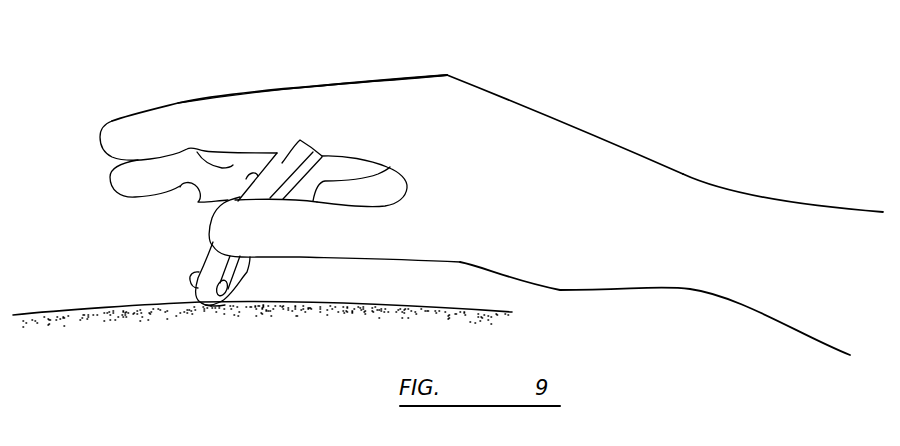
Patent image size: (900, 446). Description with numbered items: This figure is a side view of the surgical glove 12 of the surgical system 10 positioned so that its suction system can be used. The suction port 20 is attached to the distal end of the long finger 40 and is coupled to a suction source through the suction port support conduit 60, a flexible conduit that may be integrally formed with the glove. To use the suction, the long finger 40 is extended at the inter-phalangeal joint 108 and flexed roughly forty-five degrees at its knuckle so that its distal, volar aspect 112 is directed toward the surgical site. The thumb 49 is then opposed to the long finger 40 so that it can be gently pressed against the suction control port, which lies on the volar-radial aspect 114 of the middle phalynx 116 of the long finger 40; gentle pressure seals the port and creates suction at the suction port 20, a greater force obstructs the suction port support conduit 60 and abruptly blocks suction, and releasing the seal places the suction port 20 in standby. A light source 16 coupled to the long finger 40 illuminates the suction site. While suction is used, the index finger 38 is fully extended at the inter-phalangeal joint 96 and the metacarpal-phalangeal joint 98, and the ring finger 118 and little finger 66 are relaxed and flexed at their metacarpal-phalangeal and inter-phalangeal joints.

The surgical system 10 is at (628, 127).
The surgical glove 12 is at (685, 173).
The light source 16 is at (190, 282).
The suction port 20 is at (230, 307).
The index finger 38 is at (153, 126).
The long finger 40 is at (211, 262).
The thumb 49 is at (370, 240).
The suction port support conduit 60 is at (318, 150).
The little finger 66 is at (112, 175).
The inter-phalangeal joint 96 is at (265, 103).
The metacarpal-phalangeal joint 98 is at (447, 76).
The inter-phalangeal joint 108 is at (284, 181).
The distal, volar aspect 112 is at (205, 308).
The volar-radial aspect 114 is at (235, 200).
The middle phalynx 116 is at (252, 199).
The ring finger 118 is at (190, 200).